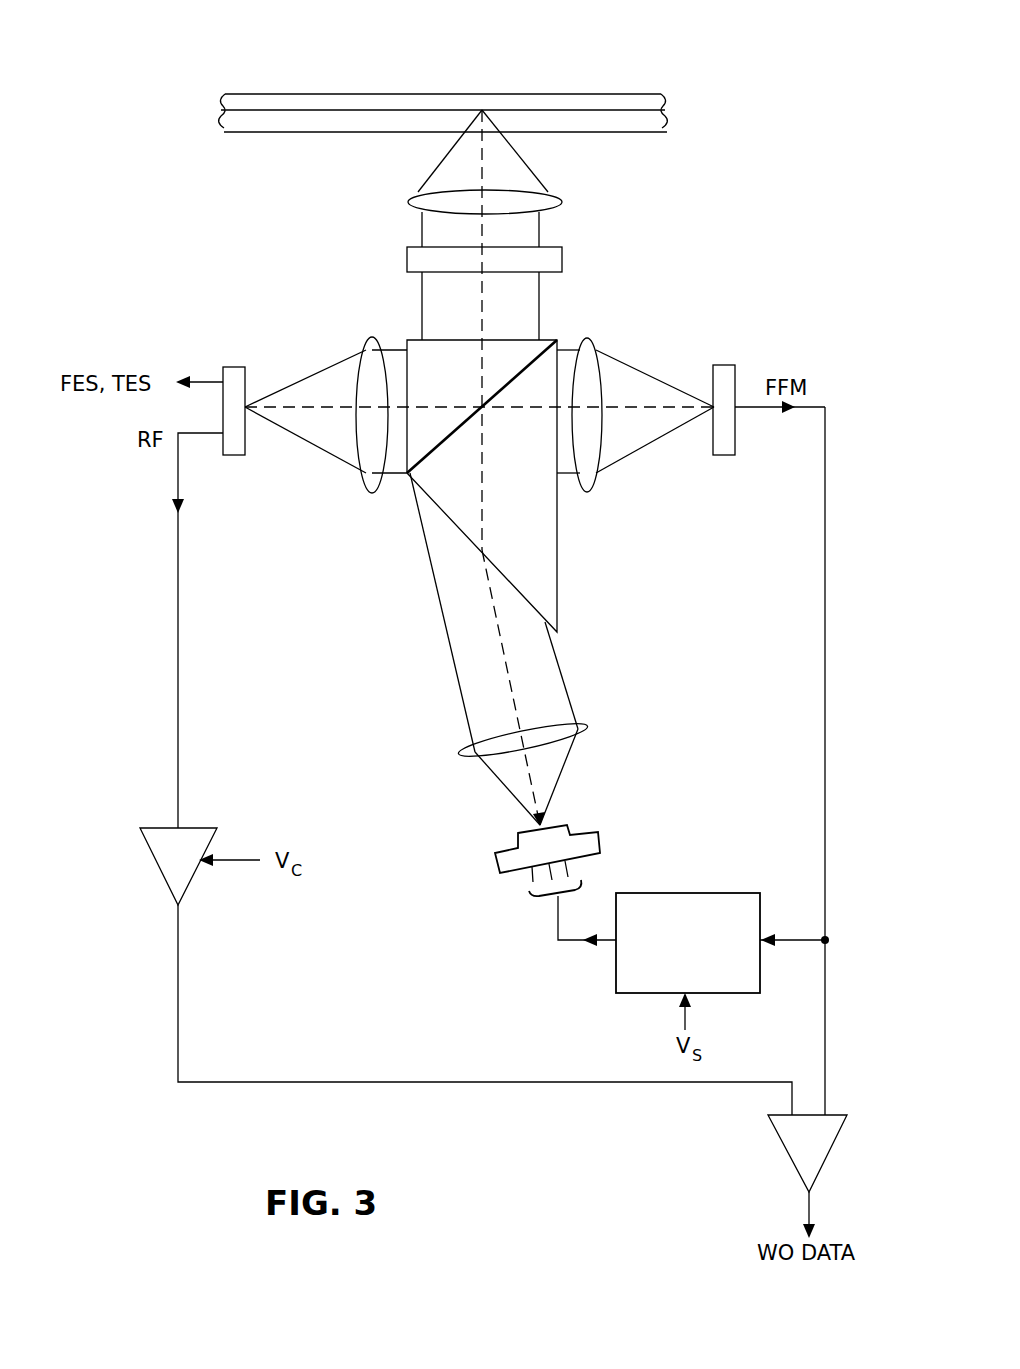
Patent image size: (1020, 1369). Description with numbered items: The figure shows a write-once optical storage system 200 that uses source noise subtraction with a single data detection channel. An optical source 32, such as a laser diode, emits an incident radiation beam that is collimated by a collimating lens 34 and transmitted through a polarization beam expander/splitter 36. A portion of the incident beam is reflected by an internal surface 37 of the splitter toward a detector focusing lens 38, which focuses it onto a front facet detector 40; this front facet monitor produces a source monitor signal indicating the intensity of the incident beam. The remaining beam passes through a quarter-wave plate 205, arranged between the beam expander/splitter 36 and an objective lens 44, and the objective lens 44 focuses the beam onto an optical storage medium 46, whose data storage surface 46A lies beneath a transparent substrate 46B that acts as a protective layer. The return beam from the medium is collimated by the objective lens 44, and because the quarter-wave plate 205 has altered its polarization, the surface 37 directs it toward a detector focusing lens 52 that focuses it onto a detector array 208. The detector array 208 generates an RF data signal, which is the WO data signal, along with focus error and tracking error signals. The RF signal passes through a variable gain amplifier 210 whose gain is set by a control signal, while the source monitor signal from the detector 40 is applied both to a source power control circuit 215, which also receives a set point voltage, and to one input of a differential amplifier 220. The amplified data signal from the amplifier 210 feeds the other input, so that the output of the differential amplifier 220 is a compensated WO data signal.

The write-once optical storage system 200 is at (76, 224).
The optical storage medium 46 is at (655, 65).
The data storage surface 46A is at (288, 100).
The transparent substrate 46B is at (338, 126).
The objective lens 44 is at (411, 200).
The quarter-wave plate 205 is at (407, 260).
The detector focusing lens 52 is at (372, 337).
The polarization beam expander/splitter 36 is at (492, 336).
The internal surface 37 is at (425, 458).
The detector focusing lens 38 is at (590, 332).
The detector array 208 is at (235, 458).
The front facet detector 40 is at (726, 457).
The collimating lens 34 is at (590, 727).
The optical source 32 is at (600, 843).
The source power control circuit 215 is at (722, 893).
The variable gain amplifier 210 is at (152, 859).
The differential amplifier 220 is at (780, 1146).